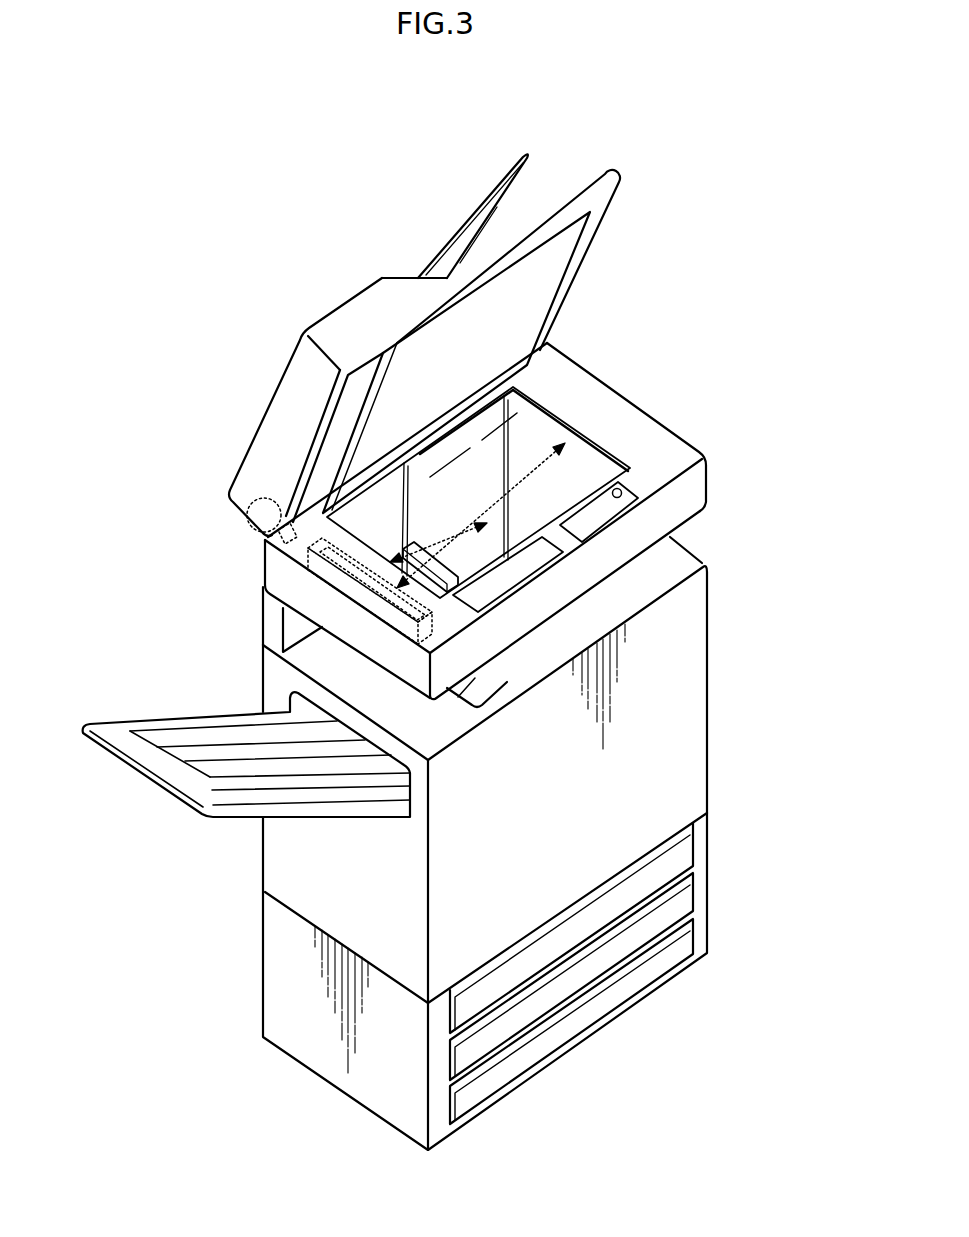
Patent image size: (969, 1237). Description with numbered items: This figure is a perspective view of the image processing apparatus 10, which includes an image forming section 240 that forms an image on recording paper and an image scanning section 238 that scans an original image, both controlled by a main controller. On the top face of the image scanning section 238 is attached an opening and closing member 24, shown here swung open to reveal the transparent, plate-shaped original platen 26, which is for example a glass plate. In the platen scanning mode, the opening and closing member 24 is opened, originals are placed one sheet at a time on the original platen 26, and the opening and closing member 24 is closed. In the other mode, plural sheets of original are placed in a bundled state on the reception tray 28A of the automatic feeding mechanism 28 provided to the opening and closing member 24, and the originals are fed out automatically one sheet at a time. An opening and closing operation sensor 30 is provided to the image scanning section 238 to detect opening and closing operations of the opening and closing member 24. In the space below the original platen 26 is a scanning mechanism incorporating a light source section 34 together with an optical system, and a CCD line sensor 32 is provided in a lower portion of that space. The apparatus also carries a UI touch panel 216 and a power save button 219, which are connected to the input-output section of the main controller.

The image processing apparatus 10 is at (711, 252).
The opening and closing member 24 is at (580, 184).
The original platen 26 is at (642, 478).
The automatic feeding mechanism 28 is at (353, 318).
The reception tray 28A is at (490, 207).
The opening and closing operation sensor 30 is at (250, 522).
The CCD line sensor 32 is at (427, 556).
The light source section 34 is at (308, 550).
The UI touch panel 216 is at (537, 600).
The power save button 219 is at (625, 483).
The image scanning section 238 is at (702, 493).
The image forming section 240 is at (674, 695).